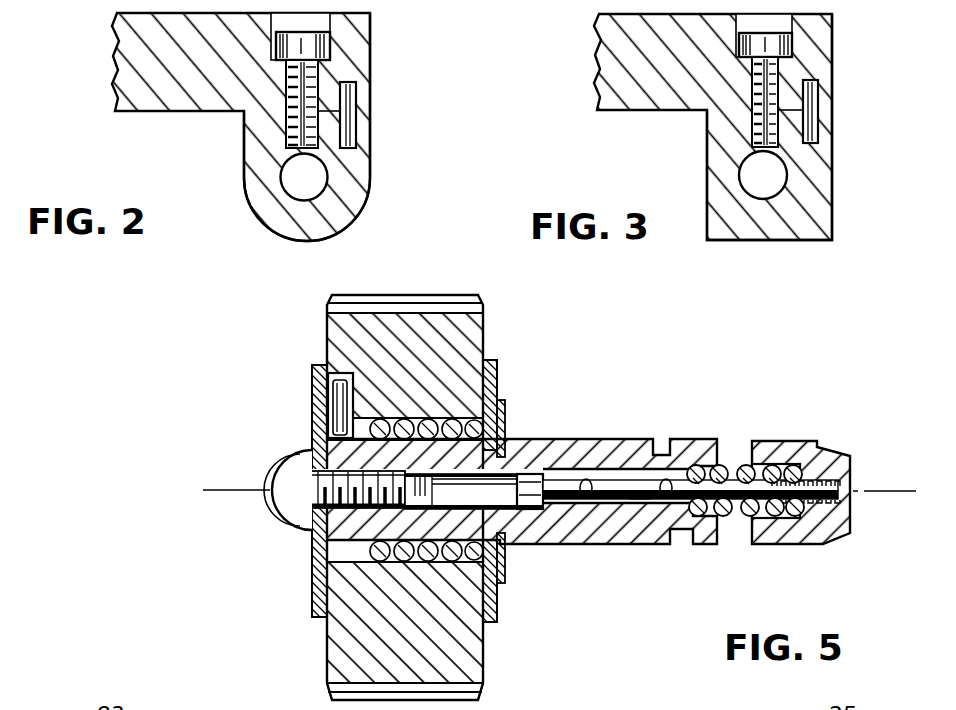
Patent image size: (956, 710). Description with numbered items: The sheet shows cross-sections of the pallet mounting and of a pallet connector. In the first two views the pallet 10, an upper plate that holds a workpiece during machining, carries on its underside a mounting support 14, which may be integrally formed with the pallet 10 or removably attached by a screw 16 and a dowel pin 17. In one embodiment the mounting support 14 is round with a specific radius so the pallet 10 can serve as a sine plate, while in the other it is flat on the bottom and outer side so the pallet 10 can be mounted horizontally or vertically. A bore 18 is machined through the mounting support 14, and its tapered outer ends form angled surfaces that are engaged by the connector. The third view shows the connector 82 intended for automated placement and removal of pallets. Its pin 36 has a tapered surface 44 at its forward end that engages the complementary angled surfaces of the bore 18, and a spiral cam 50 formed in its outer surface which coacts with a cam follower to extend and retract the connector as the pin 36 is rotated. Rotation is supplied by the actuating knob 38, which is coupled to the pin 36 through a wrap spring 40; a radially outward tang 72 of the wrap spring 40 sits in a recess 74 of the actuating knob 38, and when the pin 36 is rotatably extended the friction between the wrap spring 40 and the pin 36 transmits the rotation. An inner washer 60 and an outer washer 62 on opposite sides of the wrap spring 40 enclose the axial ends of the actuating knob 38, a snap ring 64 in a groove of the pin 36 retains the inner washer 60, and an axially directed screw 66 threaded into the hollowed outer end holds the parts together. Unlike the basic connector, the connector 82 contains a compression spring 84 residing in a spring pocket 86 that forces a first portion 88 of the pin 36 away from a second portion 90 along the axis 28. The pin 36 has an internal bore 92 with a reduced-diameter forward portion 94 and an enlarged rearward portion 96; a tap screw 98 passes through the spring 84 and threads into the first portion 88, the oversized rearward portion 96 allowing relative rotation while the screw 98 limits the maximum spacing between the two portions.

In FIG. 2, the pallet 10 is at (113, 60).
In FIG. 3, the pallet 10 is at (595, 62).
In FIG. 2, the mounting support 14 is at (370, 160).
In FIG. 3, the mounting support 14 is at (833, 175).
In FIG. 2, the screw 16 is at (323, 25).
In FIG. 3, the screw 16 is at (785, 25).
In FIG. 2, the dowel pin 17 is at (358, 97).
In FIG. 3, the dowel pin 17 is at (820, 88).
In FIG. 2, the bore 18 is at (325, 188).
In FIG. 3, the bore 18 is at (780, 188).
In FIG. 5, the axis 28 is at (225, 488).
In FIG. 5, the pin 36 is at (620, 548).
In FIG. 5, the actuating knob 38 is at (470, 327).
In FIG. 5, the wrap spring 40 is at (497, 400).
In FIG. 5, the tapered surface 44 is at (830, 452).
In FIG. 5, the spiral cam 50 is at (661, 454).
In FIG. 5, the inner washer 60 is at (498, 618).
In FIG. 5, the outer washer 62 is at (312, 608).
In FIG. 5, the snap ring 64 is at (501, 584).
In FIG. 5, the screw 66 is at (280, 510).
In FIG. 5, the tang 72 is at (330, 394).
In FIG. 5, the recess 74 is at (338, 372).
In FIG. 5, the connector 82 is at (322, 687).
In FIG. 5, the compression spring 84 is at (735, 518).
In FIG. 5, the spring pocket 86 is at (765, 466).
In FIG. 5, the first portion 88 is at (790, 547).
In FIG. 5, the second portion 90 is at (553, 439).
In FIG. 5, the internal bore 92 is at (590, 480).
In FIG. 5, the forward portion 94 is at (668, 480).
In FIG. 5, the rearward portion 96 is at (536, 512).
In FIG. 5, the tap screw 98 is at (640, 500).